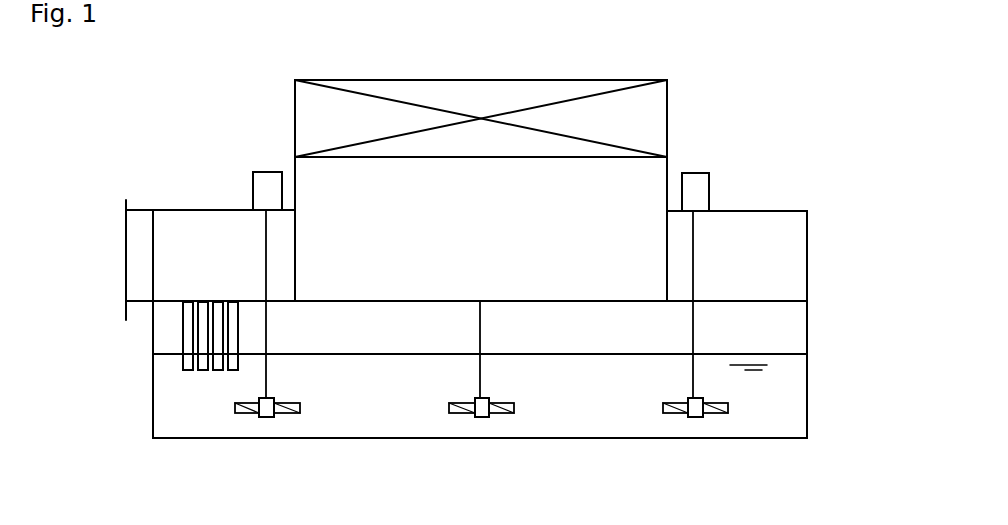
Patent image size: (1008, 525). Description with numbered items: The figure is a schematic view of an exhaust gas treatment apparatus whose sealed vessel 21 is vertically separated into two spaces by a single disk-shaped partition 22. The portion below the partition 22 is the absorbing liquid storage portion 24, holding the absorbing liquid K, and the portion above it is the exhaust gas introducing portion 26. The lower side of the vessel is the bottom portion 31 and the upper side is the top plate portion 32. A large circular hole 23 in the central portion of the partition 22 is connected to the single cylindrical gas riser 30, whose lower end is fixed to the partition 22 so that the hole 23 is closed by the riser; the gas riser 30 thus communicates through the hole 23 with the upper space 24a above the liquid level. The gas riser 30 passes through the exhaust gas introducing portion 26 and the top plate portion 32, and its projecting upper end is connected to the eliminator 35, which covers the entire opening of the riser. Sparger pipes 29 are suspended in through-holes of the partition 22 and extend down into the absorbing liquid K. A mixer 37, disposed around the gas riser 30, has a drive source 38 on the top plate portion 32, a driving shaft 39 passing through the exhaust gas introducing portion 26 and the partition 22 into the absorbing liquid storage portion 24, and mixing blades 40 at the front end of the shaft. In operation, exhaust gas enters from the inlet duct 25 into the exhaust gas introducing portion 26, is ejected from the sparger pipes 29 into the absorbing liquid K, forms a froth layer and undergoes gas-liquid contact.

The sealed vessel 21 is at (782, 222).
The partition 22 is at (765, 302).
The hole 23 is at (660, 304).
The absorbing liquid storage portion 24 is at (778, 388).
The upper space 24a is at (783, 330).
The inlet duct 25 is at (142, 220).
The exhaust gas introducing portion 26 is at (783, 243).
The sparger pipes 29 is at (205, 327).
The gas riser 30 is at (647, 178).
The bottom portion 31 is at (638, 440).
The top plate portion 32 is at (760, 222).
The eliminator 35 is at (645, 103).
The mixer 37 is at (480, 459).
The drive source 38 is at (265, 183).
The driving shaft 39 is at (266, 262).
The mixing blades 40 is at (248, 413).
The absorbing liquid K is at (773, 422).